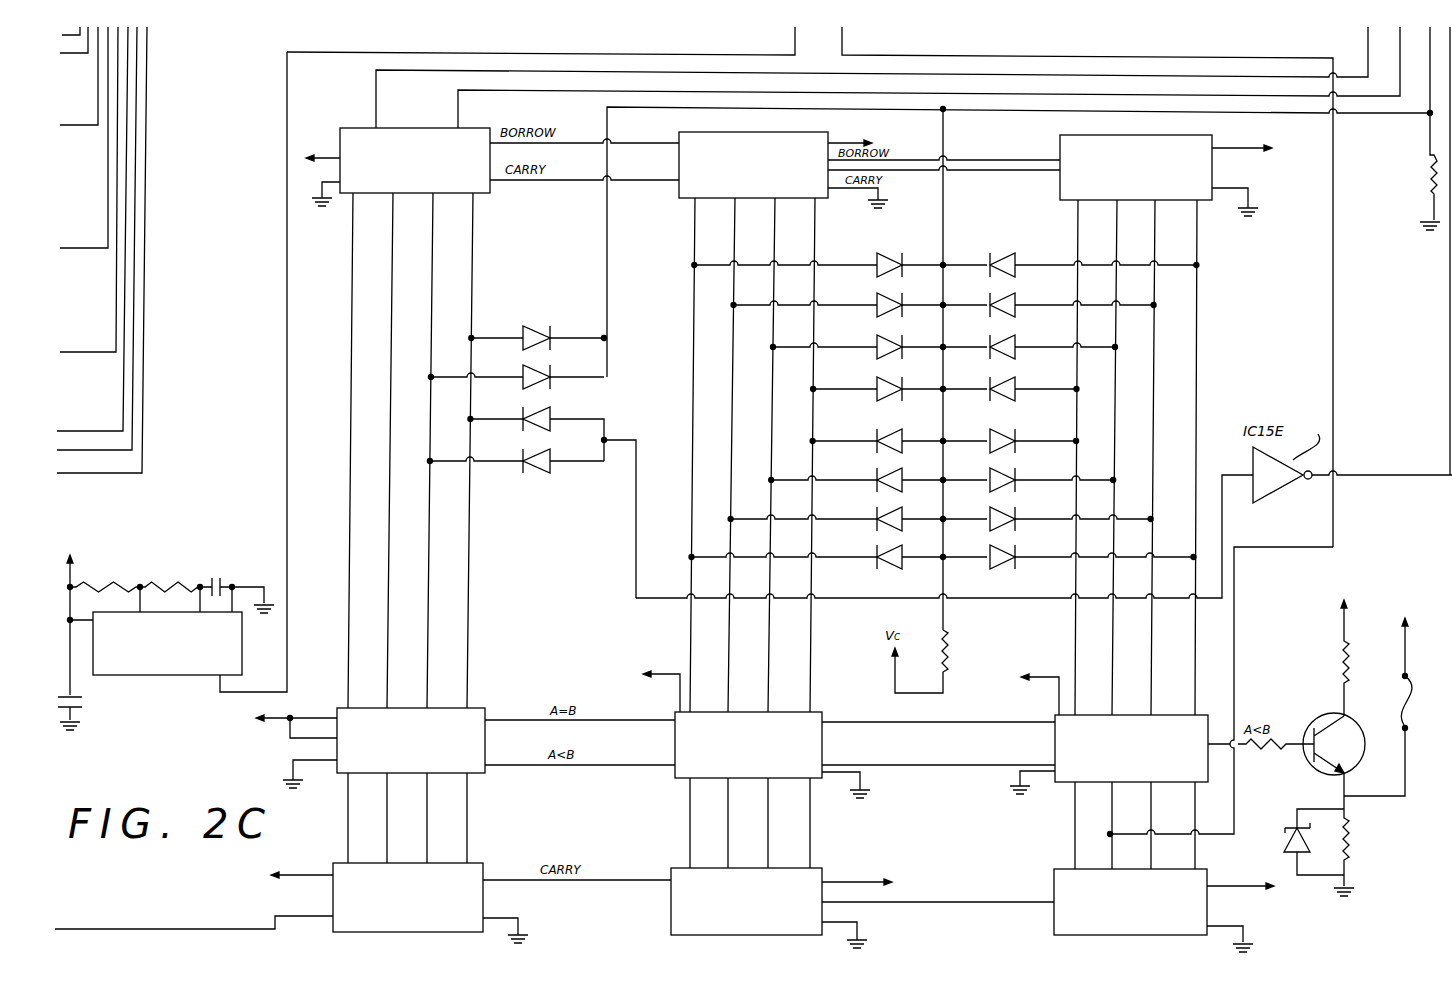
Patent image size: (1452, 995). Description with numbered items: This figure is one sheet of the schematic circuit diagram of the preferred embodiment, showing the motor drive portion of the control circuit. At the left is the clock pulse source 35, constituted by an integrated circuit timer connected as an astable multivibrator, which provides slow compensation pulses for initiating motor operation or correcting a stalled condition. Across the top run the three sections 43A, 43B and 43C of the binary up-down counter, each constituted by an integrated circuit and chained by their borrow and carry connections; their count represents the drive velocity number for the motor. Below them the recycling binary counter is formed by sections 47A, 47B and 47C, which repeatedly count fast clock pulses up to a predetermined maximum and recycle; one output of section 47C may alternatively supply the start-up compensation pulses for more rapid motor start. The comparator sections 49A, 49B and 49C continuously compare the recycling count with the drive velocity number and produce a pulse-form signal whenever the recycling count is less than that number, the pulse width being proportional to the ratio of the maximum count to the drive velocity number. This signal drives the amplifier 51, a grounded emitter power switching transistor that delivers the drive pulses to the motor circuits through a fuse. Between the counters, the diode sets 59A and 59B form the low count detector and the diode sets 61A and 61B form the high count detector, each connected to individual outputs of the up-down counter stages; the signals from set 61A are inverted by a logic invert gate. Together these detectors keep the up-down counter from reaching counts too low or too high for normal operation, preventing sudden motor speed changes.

The clock pulse source 35 is at (170, 677).
The up-down counter section 43A is at (473, 128).
The up-down counter section 43B is at (683, 198).
The up-down counter section 43C is at (1064, 200).
The recycling counter section 47A is at (487, 848).
The recycling counter section 47B is at (822, 870).
The recycling counter section 47C is at (1207, 869).
The comparator section 49A is at (485, 712).
The comparator section 49B is at (822, 712).
The comparator section 49C is at (1209, 716).
The amplifier 51 is at (1367, 722).
The low count detector diode set 59A is at (517, 357).
The low count detector diode set 59B is at (945, 327).
The high count detector diode set 61A is at (531, 502).
The high count detector diode set 61B is at (942, 499).